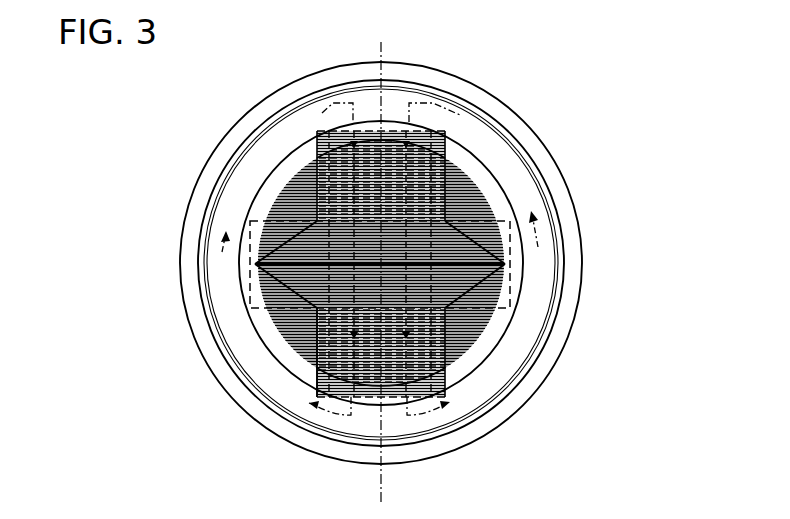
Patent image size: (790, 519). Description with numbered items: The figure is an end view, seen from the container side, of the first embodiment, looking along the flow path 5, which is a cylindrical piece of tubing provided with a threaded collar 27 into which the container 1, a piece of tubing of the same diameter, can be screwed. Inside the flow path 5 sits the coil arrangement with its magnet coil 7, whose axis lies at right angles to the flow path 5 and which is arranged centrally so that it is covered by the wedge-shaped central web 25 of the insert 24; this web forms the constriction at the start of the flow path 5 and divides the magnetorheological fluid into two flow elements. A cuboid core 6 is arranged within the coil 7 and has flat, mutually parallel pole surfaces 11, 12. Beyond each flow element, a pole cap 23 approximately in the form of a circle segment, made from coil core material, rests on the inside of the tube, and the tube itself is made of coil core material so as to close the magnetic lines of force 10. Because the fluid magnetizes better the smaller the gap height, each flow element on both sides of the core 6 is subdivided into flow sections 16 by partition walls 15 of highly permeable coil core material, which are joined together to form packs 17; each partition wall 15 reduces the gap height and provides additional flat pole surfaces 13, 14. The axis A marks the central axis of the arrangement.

The container 1 is at (217, 291).
The flow path 5 is at (465, 102).
The core 6 is at (328, 288).
The magnet coil 7 is at (248, 235).
The magnetic lines of force 10 is at (355, 233).
The pole surface 11 is at (350, 415).
The pole surface 12 is at (443, 200).
The pole surface 13 is at (316, 318).
The pole surface 14 is at (447, 312).
The partition wall 15 is at (308, 403).
The flow section 16 is at (312, 397).
The pack 17 is at (442, 343).
The pole cap 23 is at (383, 122).
The insert 24 is at (478, 157).
The wedge-shaped central web 25 is at (478, 255).
The threaded collar 27 is at (513, 403).
The axis A is at (383, 492).